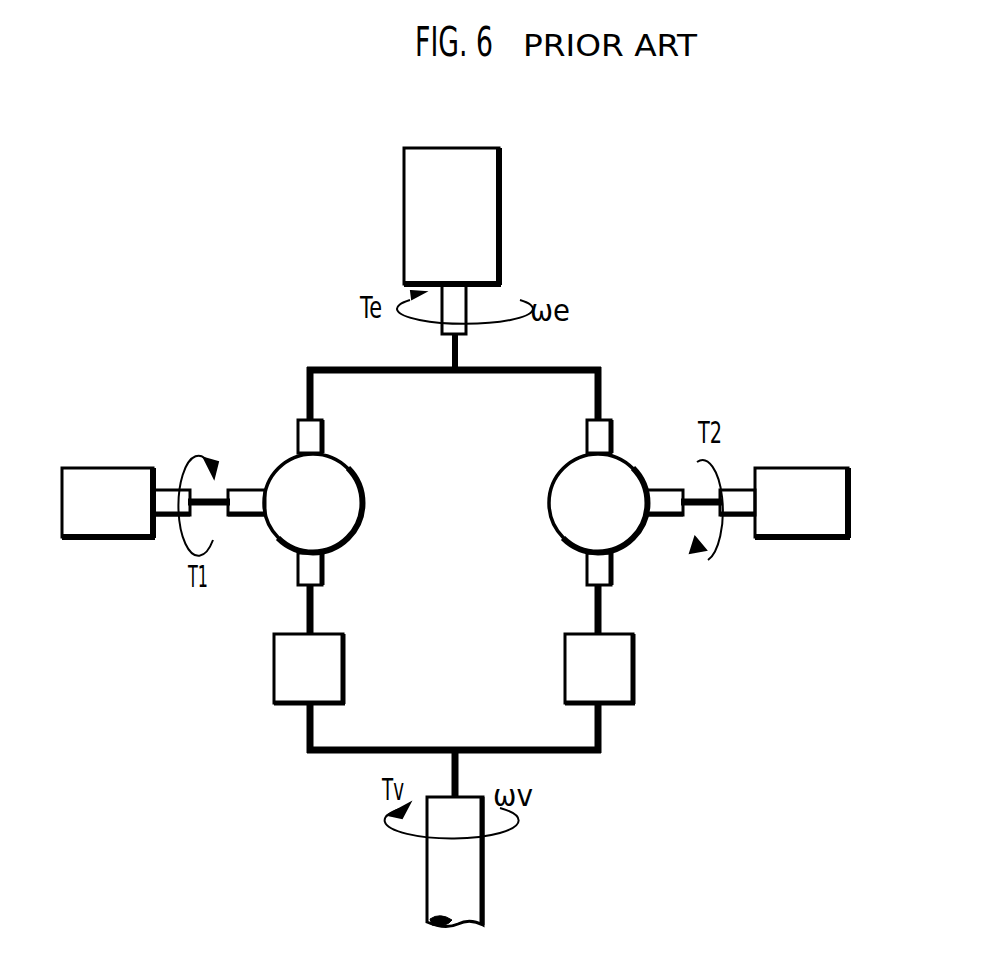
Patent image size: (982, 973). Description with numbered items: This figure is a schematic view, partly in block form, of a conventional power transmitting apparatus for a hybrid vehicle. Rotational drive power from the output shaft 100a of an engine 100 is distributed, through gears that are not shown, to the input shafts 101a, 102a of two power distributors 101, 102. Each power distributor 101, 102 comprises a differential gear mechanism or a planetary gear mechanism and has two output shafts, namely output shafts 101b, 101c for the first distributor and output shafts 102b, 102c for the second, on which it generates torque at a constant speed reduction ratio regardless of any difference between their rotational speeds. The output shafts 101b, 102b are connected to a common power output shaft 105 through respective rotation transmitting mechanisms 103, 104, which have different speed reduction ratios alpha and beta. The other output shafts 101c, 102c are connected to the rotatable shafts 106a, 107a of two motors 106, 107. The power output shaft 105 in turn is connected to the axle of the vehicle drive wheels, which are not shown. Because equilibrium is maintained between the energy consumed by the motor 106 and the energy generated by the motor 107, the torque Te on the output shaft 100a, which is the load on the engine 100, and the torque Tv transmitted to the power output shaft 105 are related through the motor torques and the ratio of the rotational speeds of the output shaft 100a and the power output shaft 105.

The engine 100 is at (501, 176).
The output shaft 100a is at (458, 298).
The power distributor 101 is at (275, 541).
The input shaft 101a is at (324, 432).
The output shaft 101b is at (324, 568).
The output shaft 101c is at (246, 490).
The power distributor 102 is at (638, 540).
The input shaft 102a is at (587, 433).
The output shaft 102b is at (587, 566).
The output shaft 102c is at (653, 490).
The rotation transmitting mechanism 103 is at (345, 668).
The rotation transmitting mechanism 104 is at (565, 668).
The power output shaft 105 is at (485, 884).
The motor 106 is at (112, 468).
The rotatable shaft 106a is at (166, 490).
The motor 107 is at (797, 468).
The rotatable shaft 107a is at (744, 490).